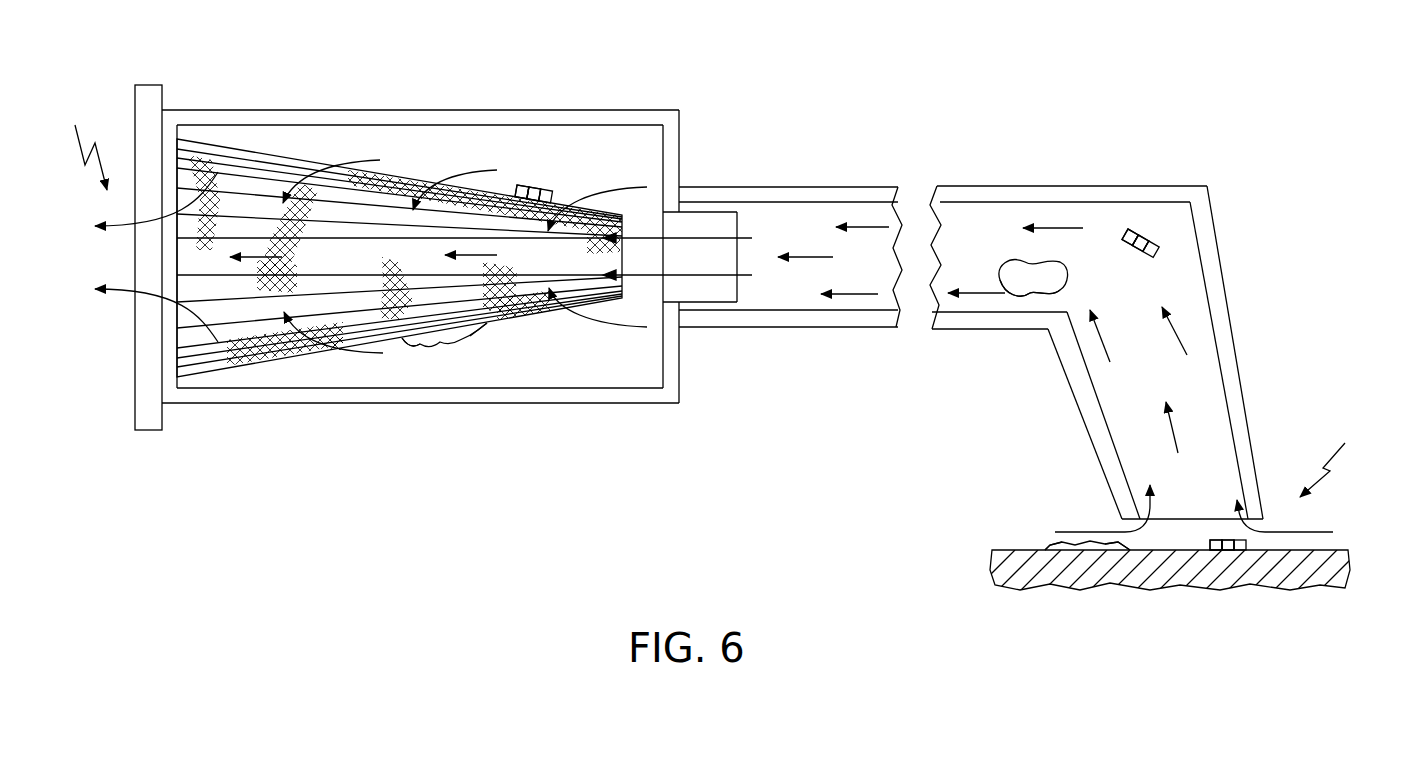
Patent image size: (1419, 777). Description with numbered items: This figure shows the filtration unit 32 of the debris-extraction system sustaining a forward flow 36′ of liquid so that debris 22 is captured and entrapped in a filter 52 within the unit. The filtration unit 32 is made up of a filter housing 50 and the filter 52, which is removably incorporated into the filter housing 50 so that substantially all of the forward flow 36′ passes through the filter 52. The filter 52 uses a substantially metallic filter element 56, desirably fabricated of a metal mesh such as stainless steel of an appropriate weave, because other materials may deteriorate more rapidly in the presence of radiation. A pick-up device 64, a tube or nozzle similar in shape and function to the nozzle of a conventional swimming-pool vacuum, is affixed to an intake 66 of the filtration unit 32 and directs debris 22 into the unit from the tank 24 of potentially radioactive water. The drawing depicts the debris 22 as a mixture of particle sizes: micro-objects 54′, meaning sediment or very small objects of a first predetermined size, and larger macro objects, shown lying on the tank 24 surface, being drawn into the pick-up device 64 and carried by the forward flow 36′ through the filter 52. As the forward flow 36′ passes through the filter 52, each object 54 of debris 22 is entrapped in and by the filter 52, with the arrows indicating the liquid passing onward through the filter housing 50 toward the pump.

The debris 22 is at (522, 187).
The tank 24 is at (1005, 550).
The filtration unit 32 is at (535, 581).
The forward flow 36′ is at (717, 293).
The filter housing 50 is at (320, 109).
The filter 52 is at (261, 359).
The object 54 is at (538, 189).
The micro-objects 54′ is at (455, 347).
The filter element 56 is at (262, 166).
The pick-up device 64 is at (1030, 185).
The intake 66 is at (712, 207).